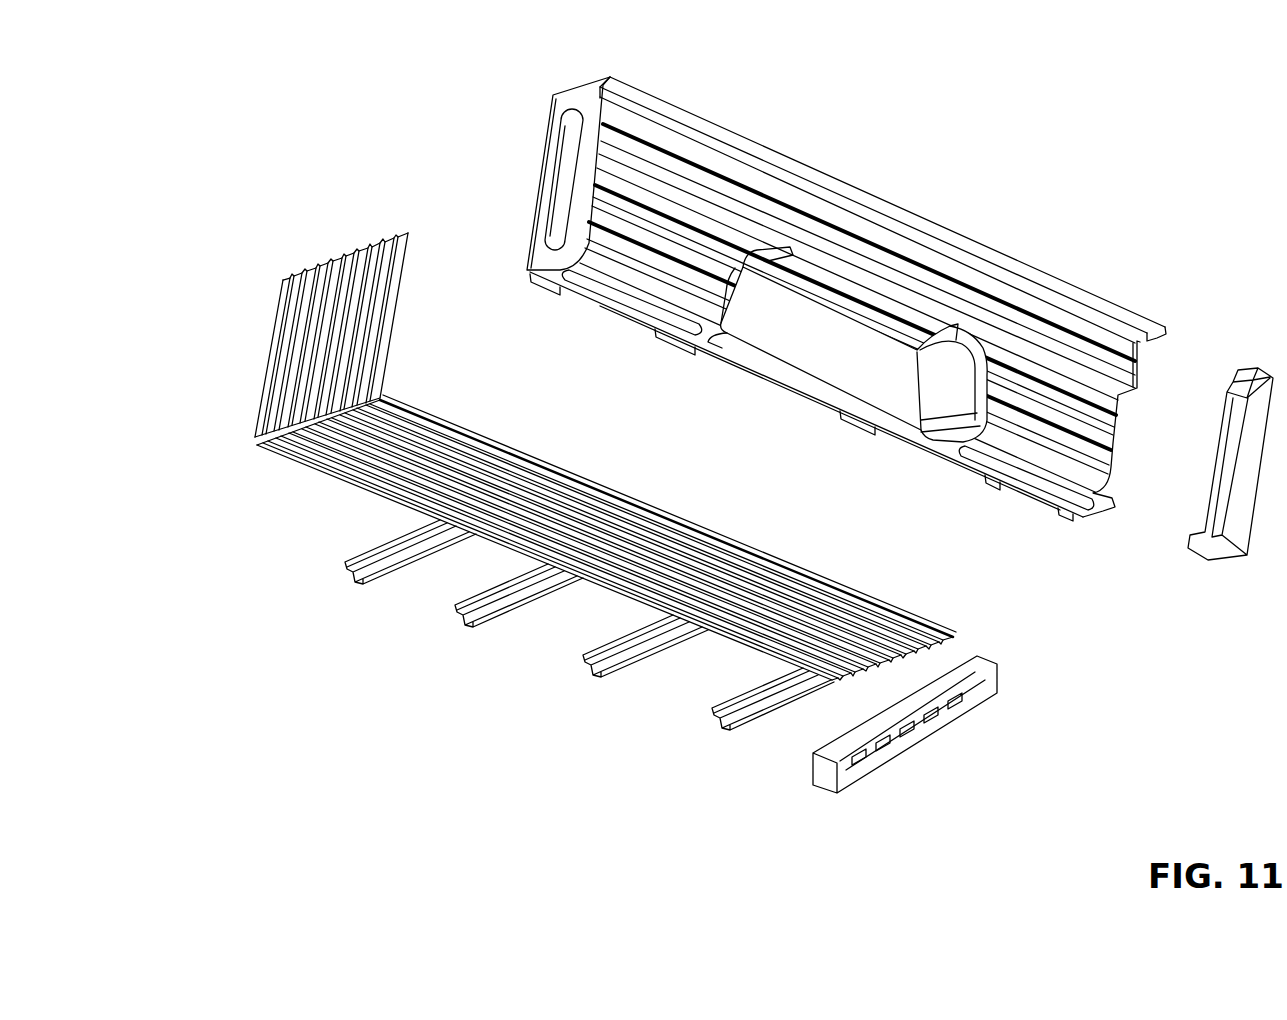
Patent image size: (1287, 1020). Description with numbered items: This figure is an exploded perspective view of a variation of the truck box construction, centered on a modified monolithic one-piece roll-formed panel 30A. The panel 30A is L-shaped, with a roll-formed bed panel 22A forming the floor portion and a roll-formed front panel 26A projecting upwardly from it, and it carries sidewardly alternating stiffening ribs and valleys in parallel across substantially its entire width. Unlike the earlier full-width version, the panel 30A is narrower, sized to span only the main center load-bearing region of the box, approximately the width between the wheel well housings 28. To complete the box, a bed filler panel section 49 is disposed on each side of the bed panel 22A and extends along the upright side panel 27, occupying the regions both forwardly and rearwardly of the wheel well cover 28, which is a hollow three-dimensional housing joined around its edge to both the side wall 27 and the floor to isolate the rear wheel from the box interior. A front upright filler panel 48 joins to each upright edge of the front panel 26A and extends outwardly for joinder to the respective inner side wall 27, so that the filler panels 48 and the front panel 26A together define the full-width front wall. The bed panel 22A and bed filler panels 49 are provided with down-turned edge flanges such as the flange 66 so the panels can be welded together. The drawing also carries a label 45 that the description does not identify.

The upright side panel 27 is at (833, 163).
The front upright filler panel 48 is at (567, 103).
The wheel well cover 28 is at (887, 325).
The bed filler panel section 49 is at (622, 293).
The down-turned edge flange 66 is at (1014, 497).
The monolithic one-piece roll-formed panel 30A is at (575, 513).
The roll-formed front panel 26A is at (388, 314).
The bend 45 is at (255, 442).
The roll-formed bed panel 22A is at (657, 540).